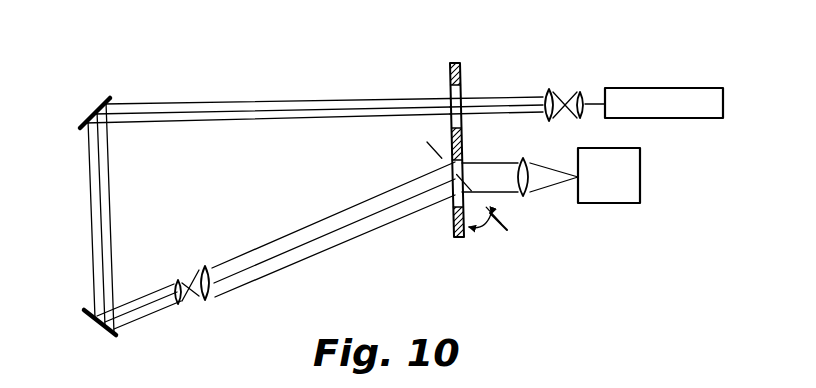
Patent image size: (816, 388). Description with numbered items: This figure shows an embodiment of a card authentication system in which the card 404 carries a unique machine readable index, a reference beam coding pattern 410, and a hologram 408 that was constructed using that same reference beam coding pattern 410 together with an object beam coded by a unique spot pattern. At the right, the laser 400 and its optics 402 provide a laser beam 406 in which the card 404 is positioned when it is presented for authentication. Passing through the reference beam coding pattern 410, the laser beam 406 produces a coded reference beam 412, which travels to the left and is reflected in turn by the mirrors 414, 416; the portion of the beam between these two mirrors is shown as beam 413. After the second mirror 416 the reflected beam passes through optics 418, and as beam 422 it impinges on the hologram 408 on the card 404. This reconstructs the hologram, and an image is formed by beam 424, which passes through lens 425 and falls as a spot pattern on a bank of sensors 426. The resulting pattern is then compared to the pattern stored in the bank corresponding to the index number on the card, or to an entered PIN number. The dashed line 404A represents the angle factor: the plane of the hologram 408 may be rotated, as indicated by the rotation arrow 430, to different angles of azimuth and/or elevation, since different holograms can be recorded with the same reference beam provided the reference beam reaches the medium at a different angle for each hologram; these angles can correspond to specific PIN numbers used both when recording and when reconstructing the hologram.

The laser 400 is at (680, 88).
The optics 402 is at (564, 92).
The card 404 is at (448, 60).
The dashed line 404A is at (503, 223).
The laser beam 406 is at (505, 97).
The hologram 408 is at (452, 203).
The reference beam coding pattern 410 is at (462, 88).
The coded reference beam 412 is at (247, 102).
The reflected beam between mirrors 413 is at (110, 203).
The mirror 414 is at (100, 97).
The mirror 416 is at (88, 316).
The optics 418 is at (196, 303).
The beam 422 is at (384, 190).
The beam 424 is at (495, 162).
The focusing lens 425 is at (522, 158).
The bank of sensors 426 is at (577, 186).
The rotation arrow 430 is at (483, 222).